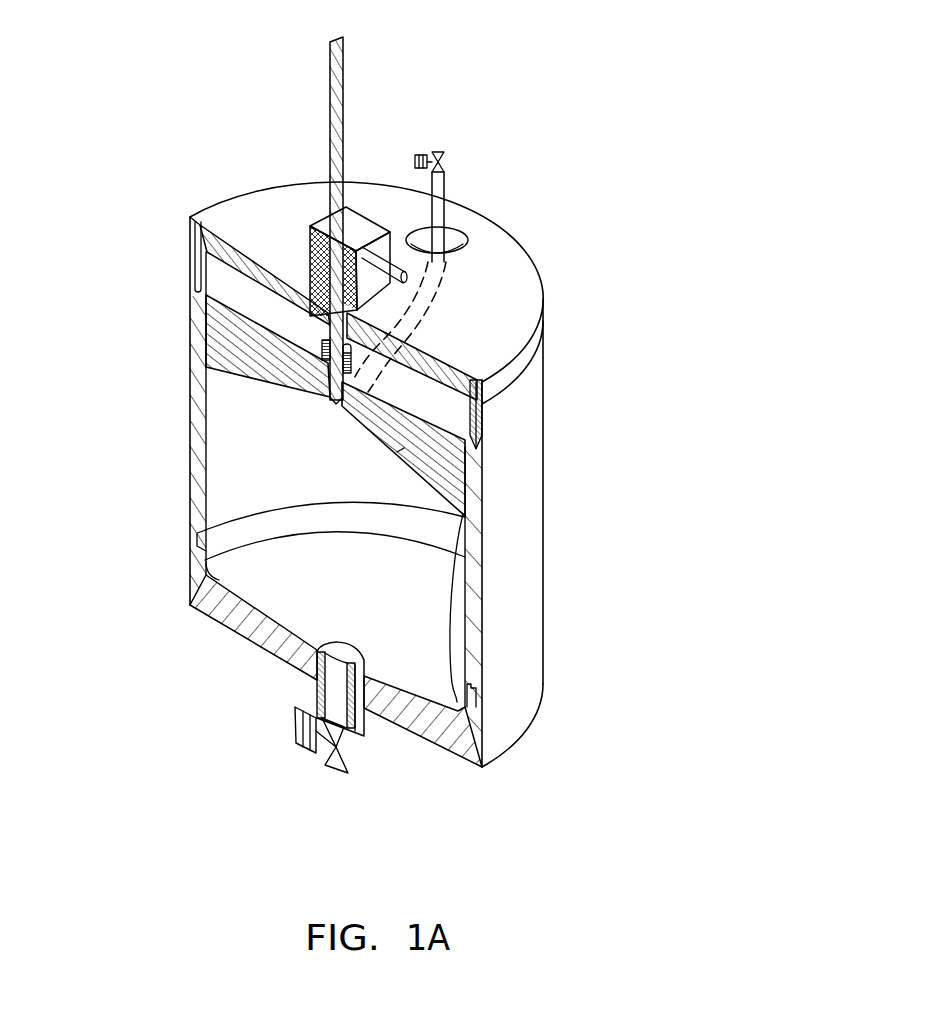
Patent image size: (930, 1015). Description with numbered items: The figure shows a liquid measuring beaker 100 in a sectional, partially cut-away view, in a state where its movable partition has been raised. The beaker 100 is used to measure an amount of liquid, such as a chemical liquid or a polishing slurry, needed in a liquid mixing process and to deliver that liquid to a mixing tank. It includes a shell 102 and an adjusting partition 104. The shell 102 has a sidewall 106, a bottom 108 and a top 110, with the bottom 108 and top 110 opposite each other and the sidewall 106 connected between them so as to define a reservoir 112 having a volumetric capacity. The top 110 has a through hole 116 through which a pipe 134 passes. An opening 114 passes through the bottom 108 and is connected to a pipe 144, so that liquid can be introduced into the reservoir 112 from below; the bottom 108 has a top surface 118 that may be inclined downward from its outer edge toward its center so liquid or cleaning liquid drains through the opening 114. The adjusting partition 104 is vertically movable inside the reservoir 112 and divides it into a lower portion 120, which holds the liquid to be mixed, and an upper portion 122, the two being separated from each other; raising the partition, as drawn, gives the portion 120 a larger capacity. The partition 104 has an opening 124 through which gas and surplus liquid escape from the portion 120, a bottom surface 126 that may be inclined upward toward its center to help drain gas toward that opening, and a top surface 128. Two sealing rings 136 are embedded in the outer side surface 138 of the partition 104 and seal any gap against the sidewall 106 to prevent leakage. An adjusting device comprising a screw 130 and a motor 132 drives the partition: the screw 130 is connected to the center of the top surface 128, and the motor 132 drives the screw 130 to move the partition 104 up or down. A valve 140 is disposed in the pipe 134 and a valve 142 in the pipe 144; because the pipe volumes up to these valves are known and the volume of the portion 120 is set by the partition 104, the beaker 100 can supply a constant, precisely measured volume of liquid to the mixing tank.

The liquid measuring beaker 100 is at (146, 78).
The shell 102 is at (648, 360).
The adjusting partition 104 is at (262, 375).
The sidewall 106 is at (532, 463).
The bottom 108 is at (517, 725).
The top 110 is at (523, 361).
The reservoir 112 is at (92, 247).
The opening 114 is at (277, 622).
The through hole 116 is at (462, 232).
The top surface 118 is at (195, 602).
The portion 120 is at (214, 380).
The portion 122 is at (211, 272).
The opening 124 is at (326, 406).
The bottom surface 126 is at (397, 452).
The top surface 128 is at (452, 295).
The screw 130 is at (329, 62).
The motor 132 is at (310, 243).
The pipe 134 is at (444, 177).
The sealing rings 136 is at (407, 384).
The outer side surface 138 is at (207, 292).
The valve 140 is at (437, 152).
The valve 142 is at (337, 768).
The pipe 144 is at (313, 683).